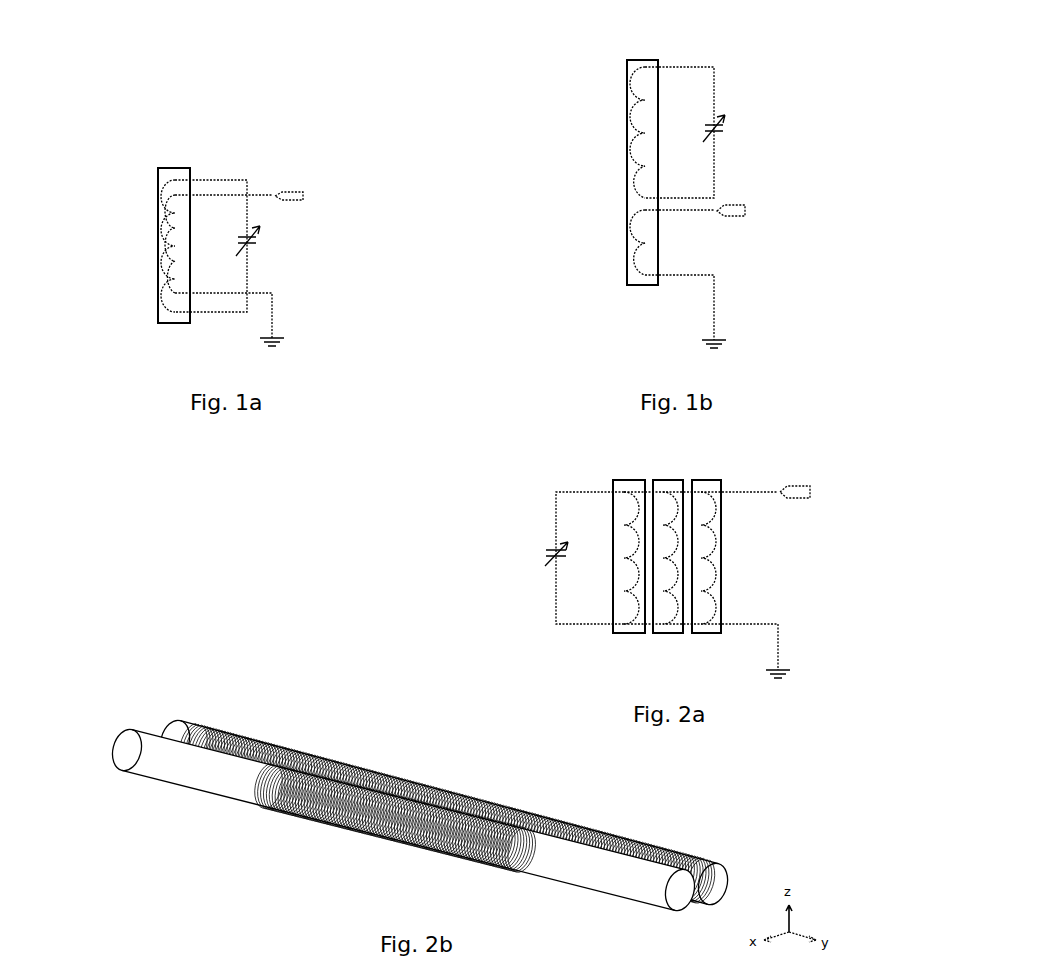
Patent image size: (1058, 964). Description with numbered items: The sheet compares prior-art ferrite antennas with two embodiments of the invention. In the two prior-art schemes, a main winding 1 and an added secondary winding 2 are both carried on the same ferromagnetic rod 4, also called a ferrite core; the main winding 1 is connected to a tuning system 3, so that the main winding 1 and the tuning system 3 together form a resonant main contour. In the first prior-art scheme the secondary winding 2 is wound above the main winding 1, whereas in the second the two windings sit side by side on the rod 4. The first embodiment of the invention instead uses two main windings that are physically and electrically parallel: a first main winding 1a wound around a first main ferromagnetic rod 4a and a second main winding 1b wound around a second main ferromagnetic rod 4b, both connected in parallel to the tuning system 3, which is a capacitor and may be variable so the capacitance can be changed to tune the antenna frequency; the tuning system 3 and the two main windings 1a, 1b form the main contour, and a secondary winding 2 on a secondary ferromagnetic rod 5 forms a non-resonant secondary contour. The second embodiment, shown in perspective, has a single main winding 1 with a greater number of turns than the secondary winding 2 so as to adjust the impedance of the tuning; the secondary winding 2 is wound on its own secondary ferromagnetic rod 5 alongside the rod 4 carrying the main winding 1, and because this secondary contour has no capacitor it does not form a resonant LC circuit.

In FIG. 1A, the main winding 1 is at (178, 175).
In FIG. 1B, the main winding 1 is at (628, 80).
In FIG. 2B, the main winding 1 is at (406, 796).
In FIG. 2A, the first main winding 1a is at (636, 495).
In FIG. 2A, the second main winding 1b is at (668, 495).
In FIG. 1A, the secondary winding 2 is at (225, 295).
In FIG. 1B, the secondary winding 2 is at (628, 228).
In FIG. 2A, the secondary winding 2 is at (708, 490).
In FIG. 2B, the secondary winding 2 is at (490, 860).
In FIG. 1A, the tuning system 3 is at (258, 235).
In FIG. 1B, the tuning system 3 is at (720, 135).
In FIG. 2A, the tuning system 3 is at (545, 552).
In FIG. 2B, the tuning system 3 is at (425, 785).
In FIG. 1A, the ferromagnetic rod 4 is at (160, 330).
In FIG. 1B, the ferromagnetic rod 4 is at (630, 292).
In FIG. 2B, the ferromagnetic rod 4 is at (165, 720).
In FIG. 2A, the first main ferromagnetic rod 4a is at (625, 637).
In FIG. 2B, the first main ferromagnetic rod 4a is at (178, 963).
In FIG. 2A, the second main ferromagnetic rod 4b is at (668, 637).
In FIG. 2B, the second main ferromagnetic rod 4b is at (122, 963).
In FIG. 2A, the secondary ferromagnetic rod 5 is at (710, 637).
In FIG. 2B, the secondary ferromagnetic rod 5 is at (125, 748).